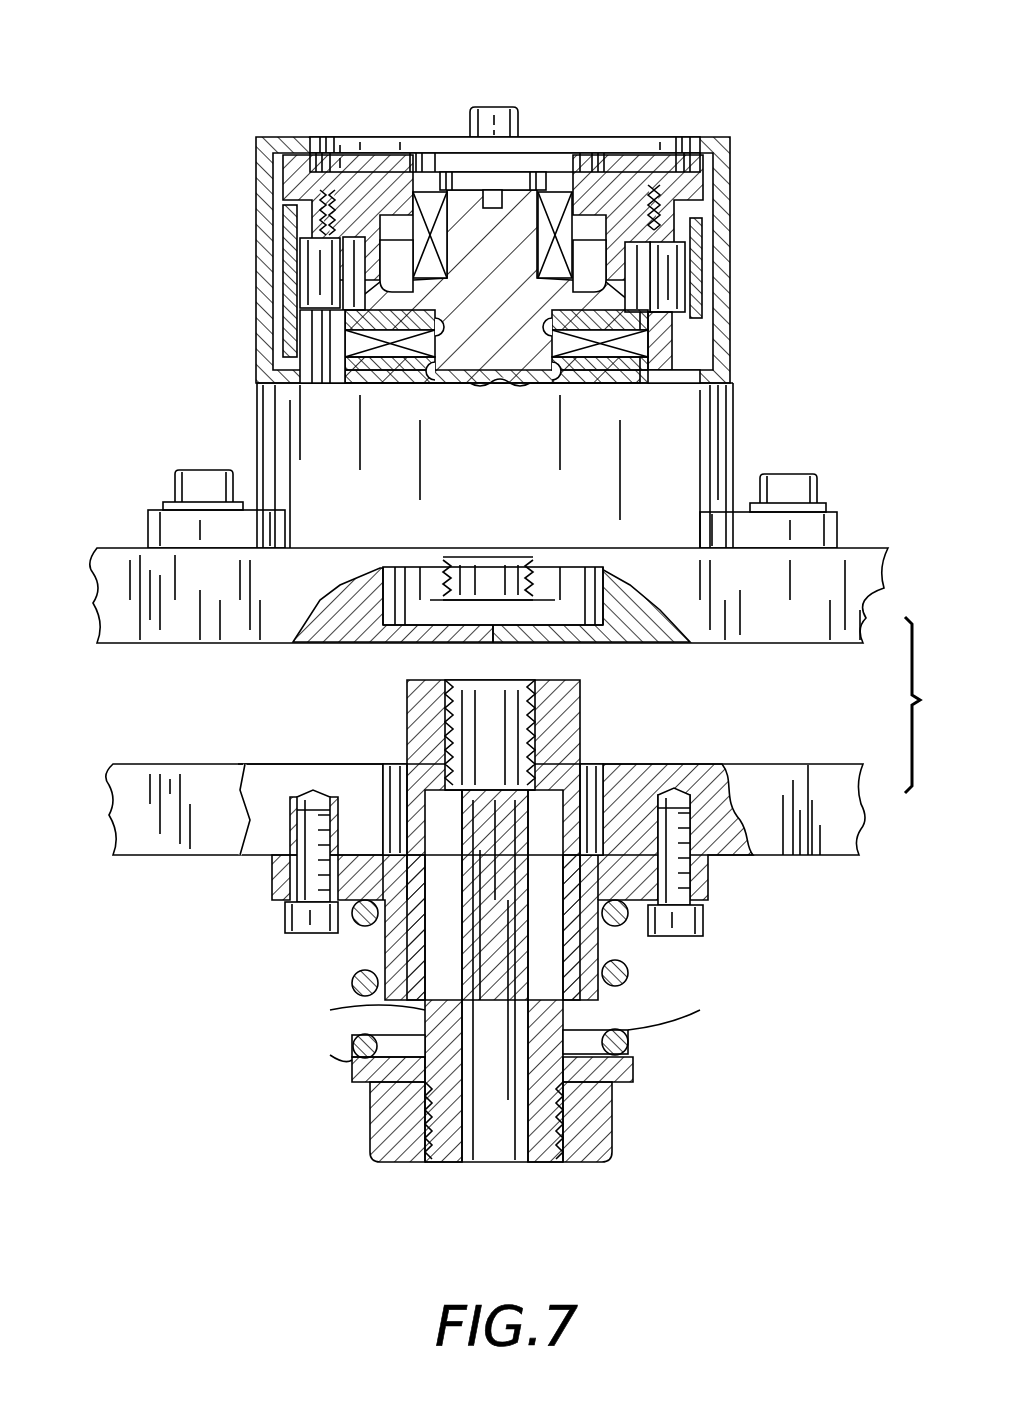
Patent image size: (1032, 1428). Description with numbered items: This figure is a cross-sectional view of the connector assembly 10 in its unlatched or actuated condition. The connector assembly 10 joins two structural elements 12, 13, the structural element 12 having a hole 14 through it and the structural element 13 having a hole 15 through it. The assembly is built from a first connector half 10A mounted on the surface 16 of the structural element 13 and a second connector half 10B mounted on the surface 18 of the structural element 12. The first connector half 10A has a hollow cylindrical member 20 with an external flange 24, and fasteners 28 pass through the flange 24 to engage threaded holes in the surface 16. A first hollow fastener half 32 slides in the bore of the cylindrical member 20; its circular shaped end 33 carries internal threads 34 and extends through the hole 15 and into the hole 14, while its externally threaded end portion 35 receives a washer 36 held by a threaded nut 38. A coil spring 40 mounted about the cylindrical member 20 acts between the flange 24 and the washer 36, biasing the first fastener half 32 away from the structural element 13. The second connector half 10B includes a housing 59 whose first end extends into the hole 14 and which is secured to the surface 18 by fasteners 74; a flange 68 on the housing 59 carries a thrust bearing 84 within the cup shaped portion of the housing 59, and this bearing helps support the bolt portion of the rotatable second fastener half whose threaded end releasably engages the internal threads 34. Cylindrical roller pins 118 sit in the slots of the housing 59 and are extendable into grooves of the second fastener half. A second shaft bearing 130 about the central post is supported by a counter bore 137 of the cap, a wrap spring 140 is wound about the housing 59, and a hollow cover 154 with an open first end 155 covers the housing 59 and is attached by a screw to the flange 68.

The connector assembly 10 is at (262, 122).
The first connector half 10A is at (730, 1080).
The second connector half 10B is at (790, 150).
The structural element 12 is at (160, 650).
The structural element 13 is at (232, 762).
The hole 14 is at (600, 642).
The hole 15 is at (400, 765).
The surface 16 is at (160, 856).
The surface 18 is at (122, 548).
The hollow cylindrical member 20 is at (430, 1020).
The external flange 24 is at (702, 868).
The fasteners 28 is at (290, 912).
The first hollow fastener half 32 is at (452, 1165).
The circular shaped end 33 is at (583, 740).
The internal threads 34 is at (455, 688).
The externally threaded end portion 35 is at (496, 606).
The washer 36 is at (410, 1070).
The threaded nut 38 is at (384, 1163).
The coil spring 40 is at (614, 1042).
The housing 59 is at (692, 347).
The flange 68 is at (292, 354).
The fasteners 74 is at (193, 470).
The thrust bearing 84 is at (290, 330).
The cylindrical roller pins 118 is at (290, 270).
The second shaft bearing 130 is at (432, 186).
The counter bore 137 is at (560, 195).
The wrap spring 140 is at (292, 223).
The hollow cover 154 is at (258, 173).
The open first end 155 is at (691, 140).